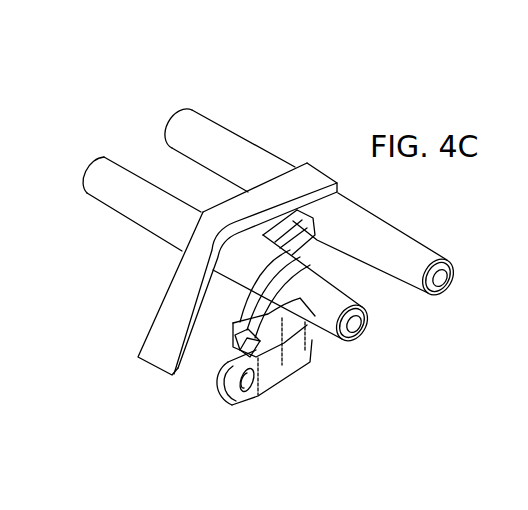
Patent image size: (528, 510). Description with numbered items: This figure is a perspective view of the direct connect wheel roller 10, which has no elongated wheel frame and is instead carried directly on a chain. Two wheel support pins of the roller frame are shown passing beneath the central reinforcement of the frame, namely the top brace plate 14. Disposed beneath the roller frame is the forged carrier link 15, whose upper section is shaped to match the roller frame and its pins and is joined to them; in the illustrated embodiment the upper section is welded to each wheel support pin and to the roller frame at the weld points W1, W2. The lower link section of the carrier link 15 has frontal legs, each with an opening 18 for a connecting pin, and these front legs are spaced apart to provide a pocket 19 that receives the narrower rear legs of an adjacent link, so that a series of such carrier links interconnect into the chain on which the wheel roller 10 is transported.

The wheel roller 10 is at (300, 80).
The top brace plate 14 is at (177, 292).
The forged carrier link 15 is at (286, 358).
The opening 18 is at (246, 392).
The pocket 19 is at (231, 346).
The weld point W1 is at (317, 238).
The weld point W2 is at (203, 215).